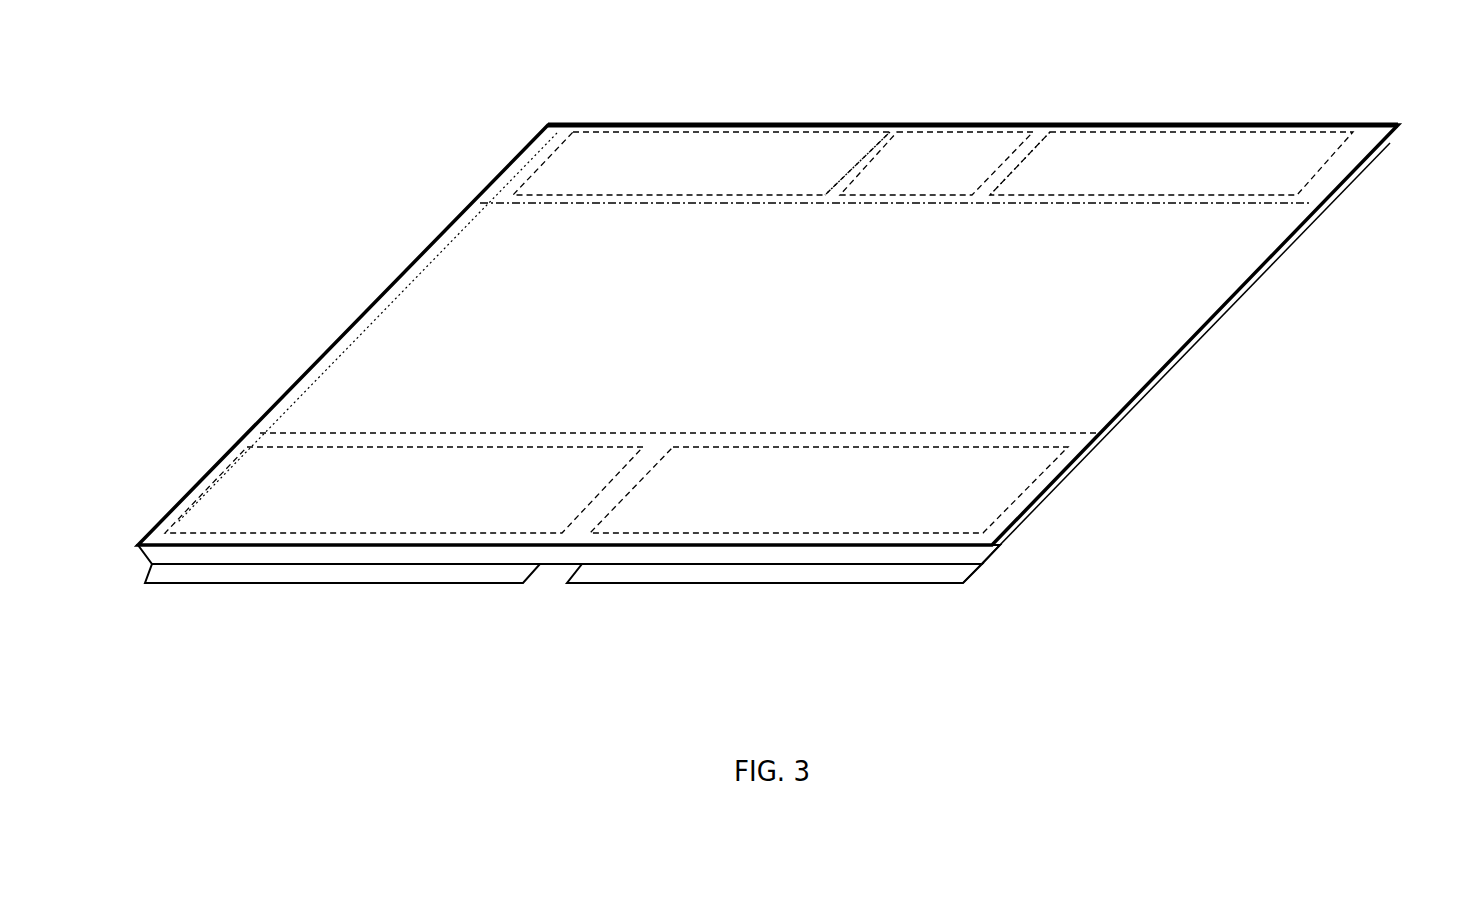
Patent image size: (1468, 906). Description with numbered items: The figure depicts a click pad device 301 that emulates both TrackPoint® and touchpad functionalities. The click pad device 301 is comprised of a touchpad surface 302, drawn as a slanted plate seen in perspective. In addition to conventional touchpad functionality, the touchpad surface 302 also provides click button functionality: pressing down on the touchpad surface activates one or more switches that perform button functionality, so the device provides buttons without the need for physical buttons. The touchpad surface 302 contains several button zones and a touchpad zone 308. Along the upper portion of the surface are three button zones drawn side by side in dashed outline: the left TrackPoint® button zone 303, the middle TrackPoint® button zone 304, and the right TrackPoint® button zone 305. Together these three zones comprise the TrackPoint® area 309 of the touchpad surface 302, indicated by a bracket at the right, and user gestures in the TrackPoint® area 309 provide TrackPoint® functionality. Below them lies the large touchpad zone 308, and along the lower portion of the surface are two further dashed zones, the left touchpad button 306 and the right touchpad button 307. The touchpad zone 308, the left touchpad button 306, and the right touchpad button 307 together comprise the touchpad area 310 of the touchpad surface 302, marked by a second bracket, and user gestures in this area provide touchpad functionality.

The click pad device 301 is at (550, 107).
The touchpad surface 302 is at (560, 125).
The left TrackPoint® button zone 303 is at (628, 135).
The middle TrackPoint® button zone 304 is at (965, 137).
The right TrackPoint® button zone 305 is at (1187, 133).
The left touchpad button 306 is at (242, 472).
The right touchpad button 307 is at (1030, 475).
The touchpad zone 308 is at (1192, 314).
The TrackPoint® area 309 is at (1380, 207).
The touchpad area 310 is at (1000, 540).